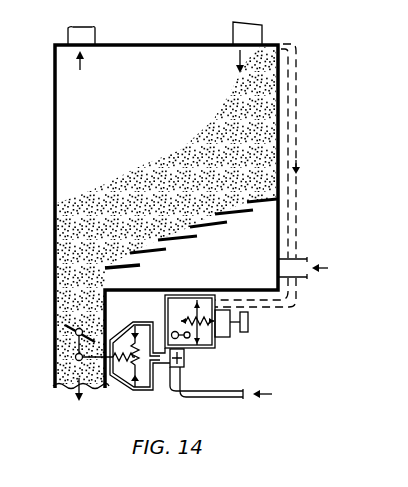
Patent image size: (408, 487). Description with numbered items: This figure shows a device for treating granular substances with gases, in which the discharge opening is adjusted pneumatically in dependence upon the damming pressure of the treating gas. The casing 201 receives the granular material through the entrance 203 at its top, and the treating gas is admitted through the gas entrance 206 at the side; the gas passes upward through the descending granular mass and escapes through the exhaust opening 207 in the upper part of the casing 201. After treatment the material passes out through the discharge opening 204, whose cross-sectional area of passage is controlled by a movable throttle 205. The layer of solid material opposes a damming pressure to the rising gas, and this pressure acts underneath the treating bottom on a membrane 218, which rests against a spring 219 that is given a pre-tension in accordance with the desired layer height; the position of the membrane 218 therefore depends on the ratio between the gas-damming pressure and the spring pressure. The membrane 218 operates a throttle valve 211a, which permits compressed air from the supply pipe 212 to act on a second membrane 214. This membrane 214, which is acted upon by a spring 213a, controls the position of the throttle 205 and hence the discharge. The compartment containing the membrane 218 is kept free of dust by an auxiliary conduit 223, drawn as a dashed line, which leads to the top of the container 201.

The casing 201 is at (281, 137).
The entrance for the granular material 203 is at (263, 40).
The discharge opening 204 is at (57, 358).
The movable throttle 205 is at (68, 327).
The gas entrance 206 is at (305, 277).
The exhaust opening 207 is at (95, 40).
The throttle valve 211a is at (185, 357).
The supply pipe 212 is at (215, 396).
The spring 213a is at (125, 380).
The membrane 214 is at (138, 388).
The membrane 218 is at (202, 303).
The spring 219 is at (222, 331).
The auxiliary conduit 223 is at (299, 171).